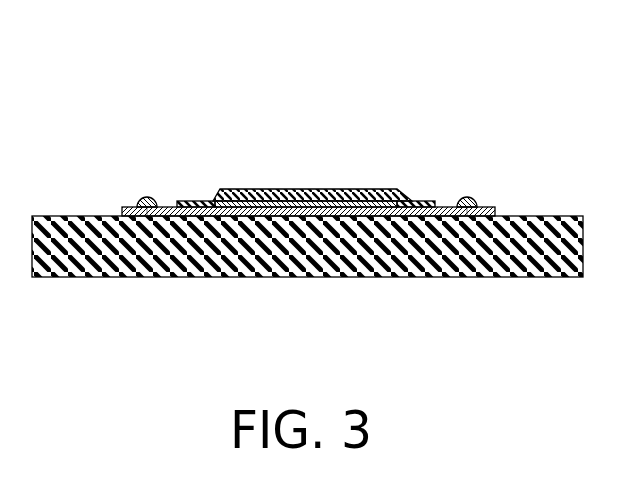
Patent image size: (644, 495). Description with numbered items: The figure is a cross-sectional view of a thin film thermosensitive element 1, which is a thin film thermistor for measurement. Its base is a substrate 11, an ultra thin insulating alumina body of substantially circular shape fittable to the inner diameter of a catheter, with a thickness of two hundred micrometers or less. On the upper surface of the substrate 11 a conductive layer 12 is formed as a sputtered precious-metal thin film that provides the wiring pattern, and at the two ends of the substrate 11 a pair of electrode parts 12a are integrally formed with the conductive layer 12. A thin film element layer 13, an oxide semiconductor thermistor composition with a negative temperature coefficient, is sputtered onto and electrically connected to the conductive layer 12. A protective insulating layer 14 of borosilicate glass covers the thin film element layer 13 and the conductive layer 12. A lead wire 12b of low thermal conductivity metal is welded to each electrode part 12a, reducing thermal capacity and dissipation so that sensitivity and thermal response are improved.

The thin film thermosensitive element 1 is at (365, 124).
The substrate 11 is at (333, 277).
The conductive layer 12 is at (216, 198).
The electrode part 12a is at (147, 216).
The lead wire 12b is at (147, 196).
The thin film element layer 13 is at (315, 189).
The protective insulating layer 14 is at (252, 189).